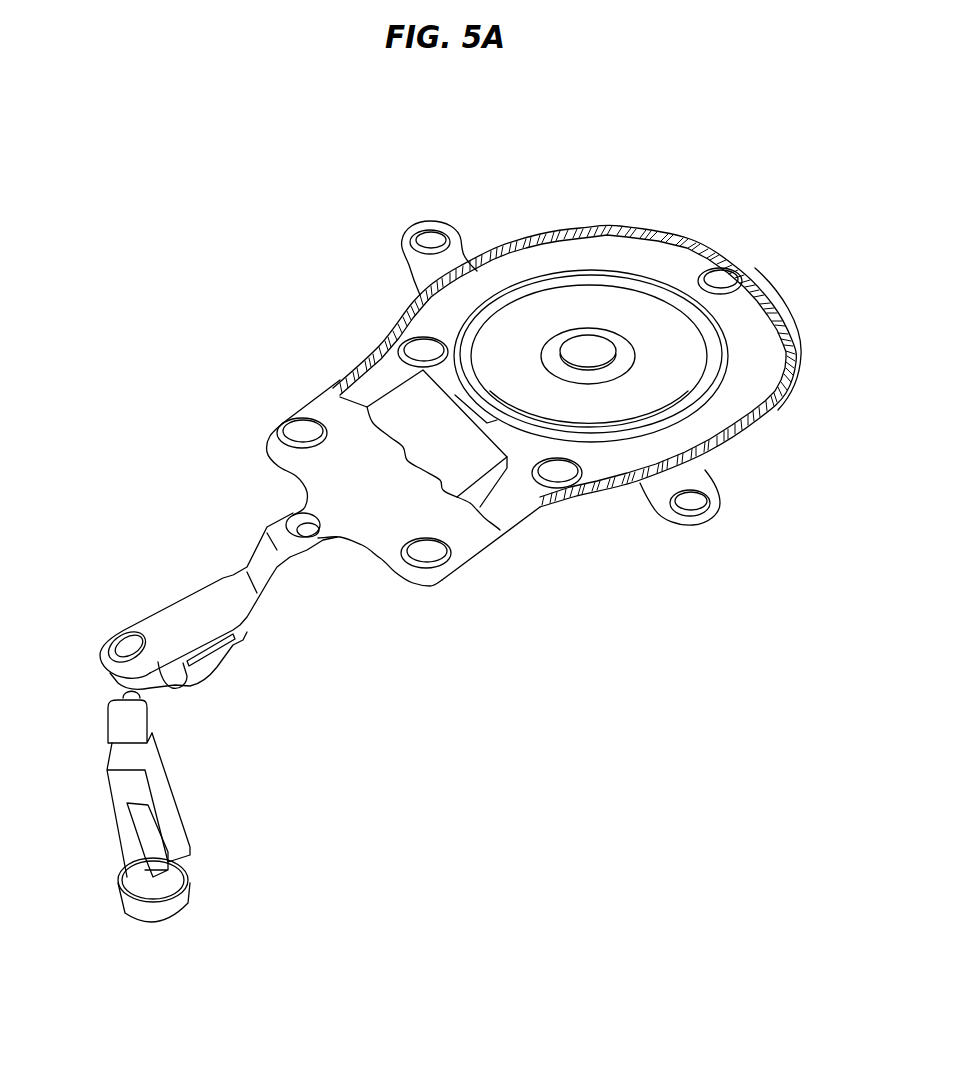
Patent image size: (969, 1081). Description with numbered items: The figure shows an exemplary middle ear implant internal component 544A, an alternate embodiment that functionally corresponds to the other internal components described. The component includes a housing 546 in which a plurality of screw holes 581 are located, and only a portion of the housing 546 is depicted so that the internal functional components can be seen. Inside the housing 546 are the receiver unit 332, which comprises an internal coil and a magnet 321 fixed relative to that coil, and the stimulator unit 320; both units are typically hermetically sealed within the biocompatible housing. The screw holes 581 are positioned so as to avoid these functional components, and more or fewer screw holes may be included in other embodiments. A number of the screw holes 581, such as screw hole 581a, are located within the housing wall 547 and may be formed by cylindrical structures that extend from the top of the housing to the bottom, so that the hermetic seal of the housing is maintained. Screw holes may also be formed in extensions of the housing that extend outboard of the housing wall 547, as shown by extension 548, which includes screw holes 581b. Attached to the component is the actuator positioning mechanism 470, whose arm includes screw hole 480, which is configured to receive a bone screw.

The middle ear implant internal component 544A is at (376, 249).
The housing 546 is at (332, 407).
The housing wall 547 is at (683, 247).
The extension 548 is at (790, 580).
The screw hole 581 is at (412, 351).
The screw hole 581a is at (480, 655).
The screw hole 581b is at (430, 240).
The receiver unit 332 is at (717, 393).
The magnet 321 is at (590, 342).
The stimulator unit 320 is at (487, 487).
The screw hole 480 is at (310, 528).
The actuator positioning mechanism 470 is at (230, 757).